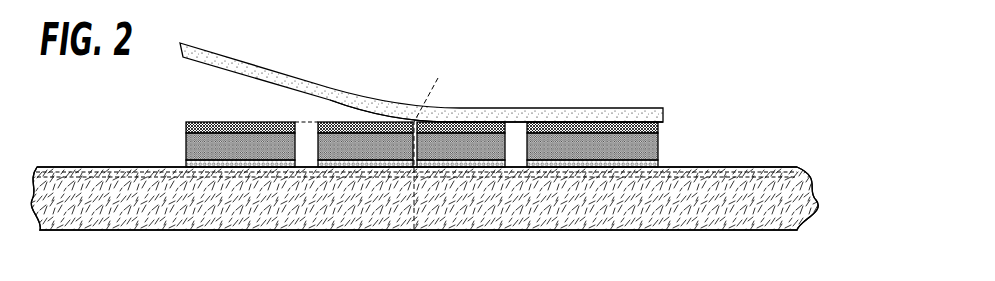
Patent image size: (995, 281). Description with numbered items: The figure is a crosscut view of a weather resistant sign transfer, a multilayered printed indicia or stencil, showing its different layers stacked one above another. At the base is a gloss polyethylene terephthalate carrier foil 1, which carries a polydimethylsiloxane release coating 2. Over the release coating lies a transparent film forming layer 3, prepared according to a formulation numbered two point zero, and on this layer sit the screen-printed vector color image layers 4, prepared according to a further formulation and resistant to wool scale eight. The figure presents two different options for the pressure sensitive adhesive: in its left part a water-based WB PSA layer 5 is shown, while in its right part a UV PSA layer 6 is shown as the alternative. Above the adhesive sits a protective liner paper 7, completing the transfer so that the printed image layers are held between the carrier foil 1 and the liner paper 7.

The gloss polyethylene terephthalate carrier foil 1 is at (793, 202).
The polydimethylsiloxane release coating 2 is at (793, 171).
The transparent film forming layer 3 is at (197, 165).
The vector color image layers 4 is at (660, 140).
The WB PSA layer 5 is at (213, 128).
The UV PSA layer 6 is at (653, 128).
The protective liner paper 7 is at (588, 110).